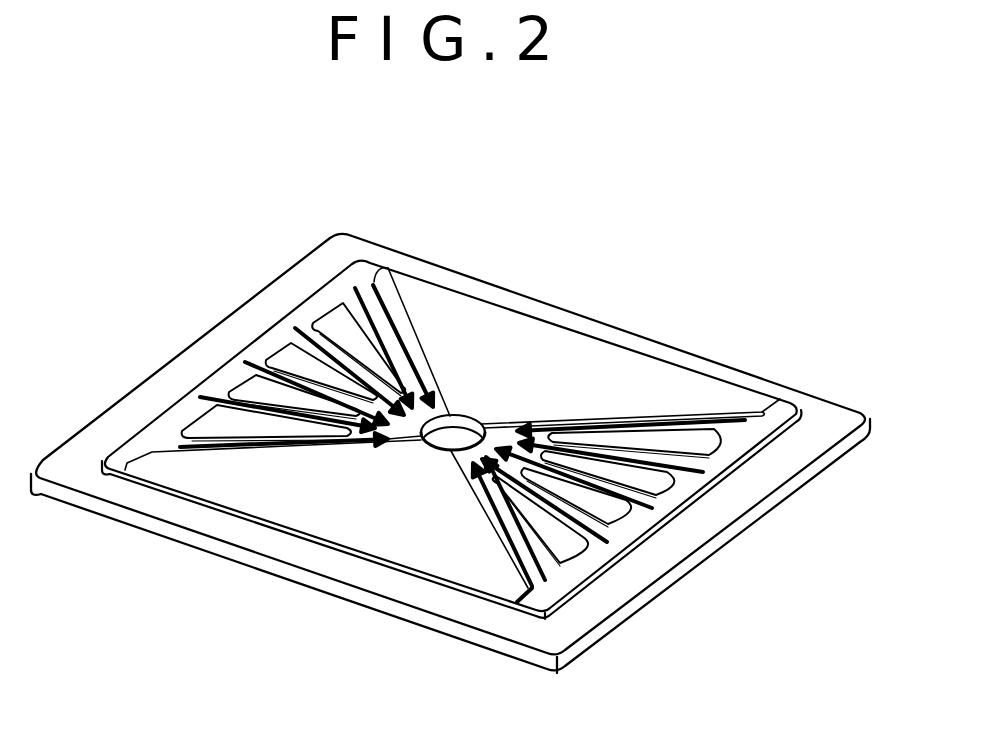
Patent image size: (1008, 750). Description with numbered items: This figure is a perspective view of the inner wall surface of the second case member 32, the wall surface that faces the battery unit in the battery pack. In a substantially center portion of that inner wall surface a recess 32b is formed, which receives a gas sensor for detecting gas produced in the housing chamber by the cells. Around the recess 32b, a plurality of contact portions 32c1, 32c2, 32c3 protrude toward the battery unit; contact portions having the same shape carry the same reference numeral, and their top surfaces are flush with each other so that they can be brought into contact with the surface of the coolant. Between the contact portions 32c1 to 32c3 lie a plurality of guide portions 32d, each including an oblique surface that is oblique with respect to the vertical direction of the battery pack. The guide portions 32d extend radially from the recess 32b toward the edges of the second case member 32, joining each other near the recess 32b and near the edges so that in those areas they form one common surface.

The second case member 32 is at (580, 630).
The recess 32b is at (458, 429).
The contact portion 32c1 is at (620, 363).
The contact portion 32c2 is at (692, 447).
The contact portion 32c3 is at (642, 480).
The guide portion 32d is at (398, 340).